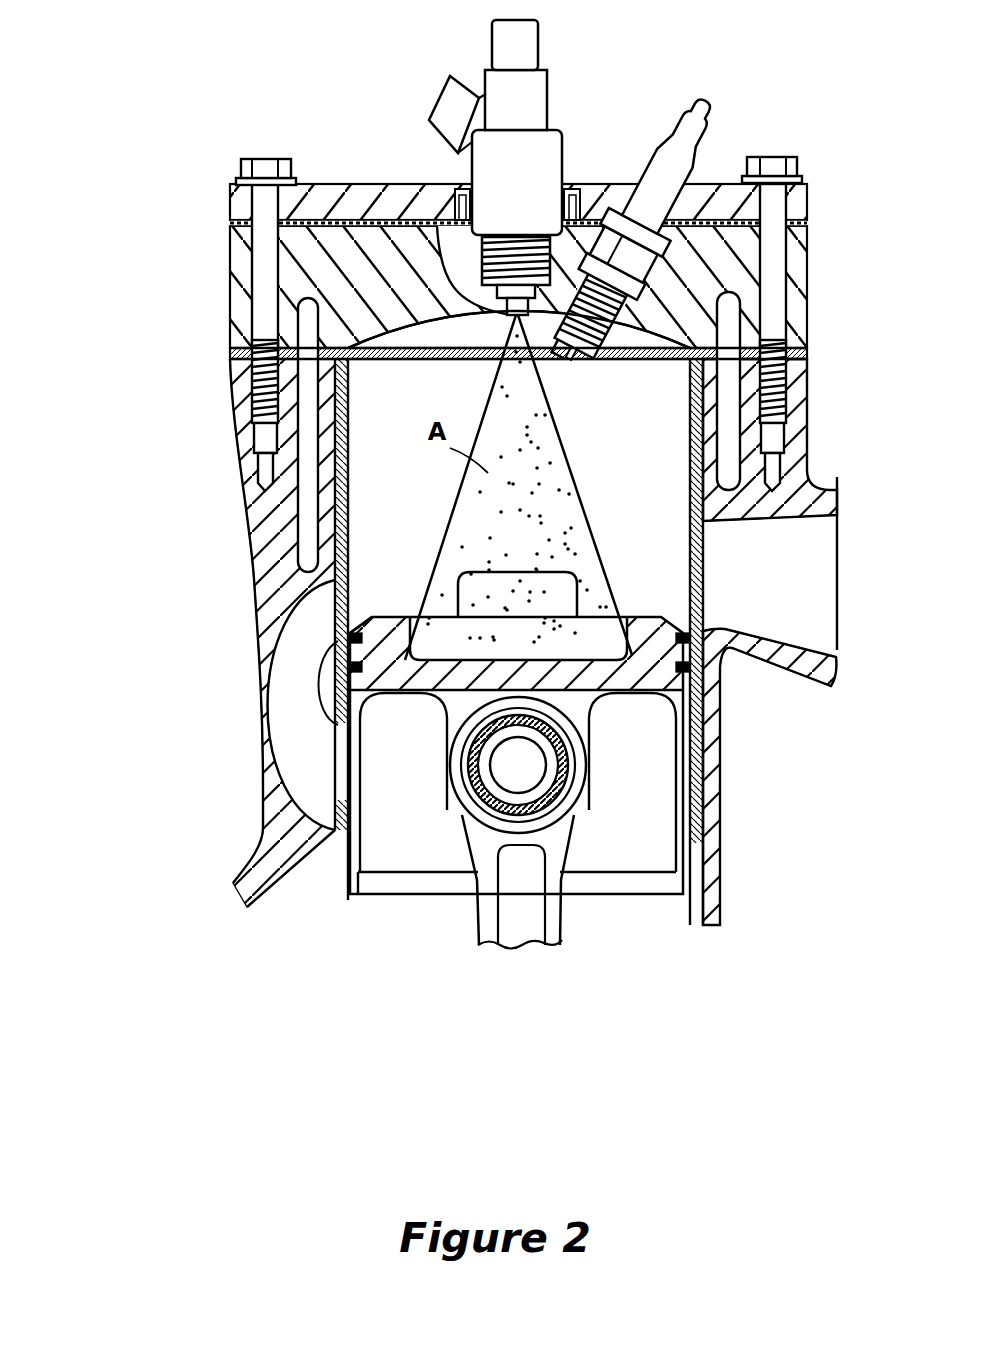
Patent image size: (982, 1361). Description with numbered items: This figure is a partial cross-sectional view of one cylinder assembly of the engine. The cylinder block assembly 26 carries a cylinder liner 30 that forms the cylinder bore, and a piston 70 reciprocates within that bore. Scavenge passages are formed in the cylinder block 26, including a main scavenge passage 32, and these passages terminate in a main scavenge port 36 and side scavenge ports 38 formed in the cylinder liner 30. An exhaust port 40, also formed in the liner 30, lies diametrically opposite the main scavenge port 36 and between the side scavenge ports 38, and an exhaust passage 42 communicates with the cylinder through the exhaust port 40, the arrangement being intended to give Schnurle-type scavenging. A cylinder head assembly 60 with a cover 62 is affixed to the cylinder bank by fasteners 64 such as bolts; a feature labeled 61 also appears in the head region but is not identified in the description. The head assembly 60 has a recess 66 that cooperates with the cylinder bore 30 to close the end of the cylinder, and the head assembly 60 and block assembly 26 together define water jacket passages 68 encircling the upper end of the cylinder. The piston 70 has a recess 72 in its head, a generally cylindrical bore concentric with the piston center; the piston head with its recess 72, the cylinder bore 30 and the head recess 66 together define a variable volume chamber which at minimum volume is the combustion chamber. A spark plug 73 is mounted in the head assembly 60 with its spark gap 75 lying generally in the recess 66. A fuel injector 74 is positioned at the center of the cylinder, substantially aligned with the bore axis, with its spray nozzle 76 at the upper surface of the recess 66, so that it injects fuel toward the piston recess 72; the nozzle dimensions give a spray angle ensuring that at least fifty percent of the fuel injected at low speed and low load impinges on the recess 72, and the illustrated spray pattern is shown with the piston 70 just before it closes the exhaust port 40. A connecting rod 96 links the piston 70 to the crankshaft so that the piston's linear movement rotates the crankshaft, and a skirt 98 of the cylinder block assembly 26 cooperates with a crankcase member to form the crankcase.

The cylinder block assembly 26 is at (170, 634).
The cylinder liner 30 is at (353, 498).
The main scavenge passage 32 is at (278, 694).
The main scavenge port 36 is at (350, 607).
The side scavenge port 38 is at (455, 600).
The exhaust port 40 is at (698, 562).
The exhaust passage 42 is at (791, 632).
The cylinder head assembly 60 is at (229, 266).
The coolant passage 61 is at (308, 440).
The cover 62 is at (238, 193).
The fasteners 64 is at (266, 157).
The recess 66 is at (443, 347).
The water jacket passage 68 is at (733, 388).
The piston 70 is at (388, 903).
The piston head recess 72 is at (586, 624).
The spark plug 73 is at (650, 145).
The fuel injector 74 is at (551, 86).
The spark gap 75 is at (569, 362).
The spray nozzle 76 is at (434, 220).
The connecting rod 96 is at (478, 926).
The skirt 98 is at (246, 895).